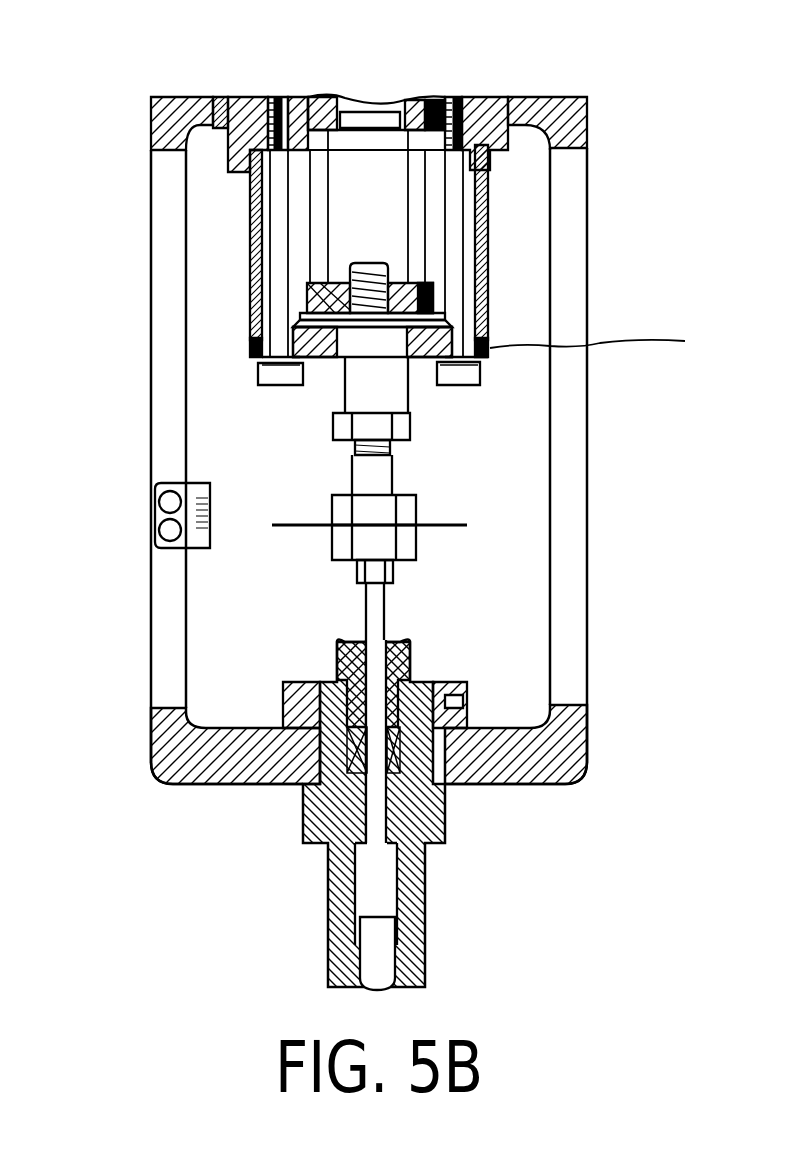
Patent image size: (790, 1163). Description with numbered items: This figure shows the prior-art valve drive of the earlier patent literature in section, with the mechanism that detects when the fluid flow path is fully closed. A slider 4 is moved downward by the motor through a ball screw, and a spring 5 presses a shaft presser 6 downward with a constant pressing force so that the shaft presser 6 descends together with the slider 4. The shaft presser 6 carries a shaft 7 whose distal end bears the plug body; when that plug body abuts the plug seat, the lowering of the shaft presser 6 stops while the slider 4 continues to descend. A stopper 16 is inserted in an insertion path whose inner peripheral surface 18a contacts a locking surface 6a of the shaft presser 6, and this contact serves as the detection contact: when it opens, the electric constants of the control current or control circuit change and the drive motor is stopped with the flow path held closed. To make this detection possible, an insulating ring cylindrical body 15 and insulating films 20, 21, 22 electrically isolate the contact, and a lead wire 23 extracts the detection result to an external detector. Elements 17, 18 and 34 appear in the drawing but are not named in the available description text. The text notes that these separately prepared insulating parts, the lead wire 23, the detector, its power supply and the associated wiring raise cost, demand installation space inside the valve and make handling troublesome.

The slider 4 is at (490, 97).
The spring 5 is at (330, 165).
The shaft presser 6 is at (252, 287).
The locking surface 6a is at (430, 312).
The shaft 7 is at (373, 620).
The insulating ring cylindrical body 15 is at (465, 327).
The stopper 16 is at (423, 360).
The stopper 17 is at (468, 373).
The seal block 18 is at (333, 360).
The inner peripheral surface 18a is at (295, 368).
The insulating film 20 is at (250, 352).
The insulating film 21 is at (312, 300).
The insulating film 22 is at (410, 360).
The lead wire 23 is at (603, 342).
The housing 34 is at (151, 140).